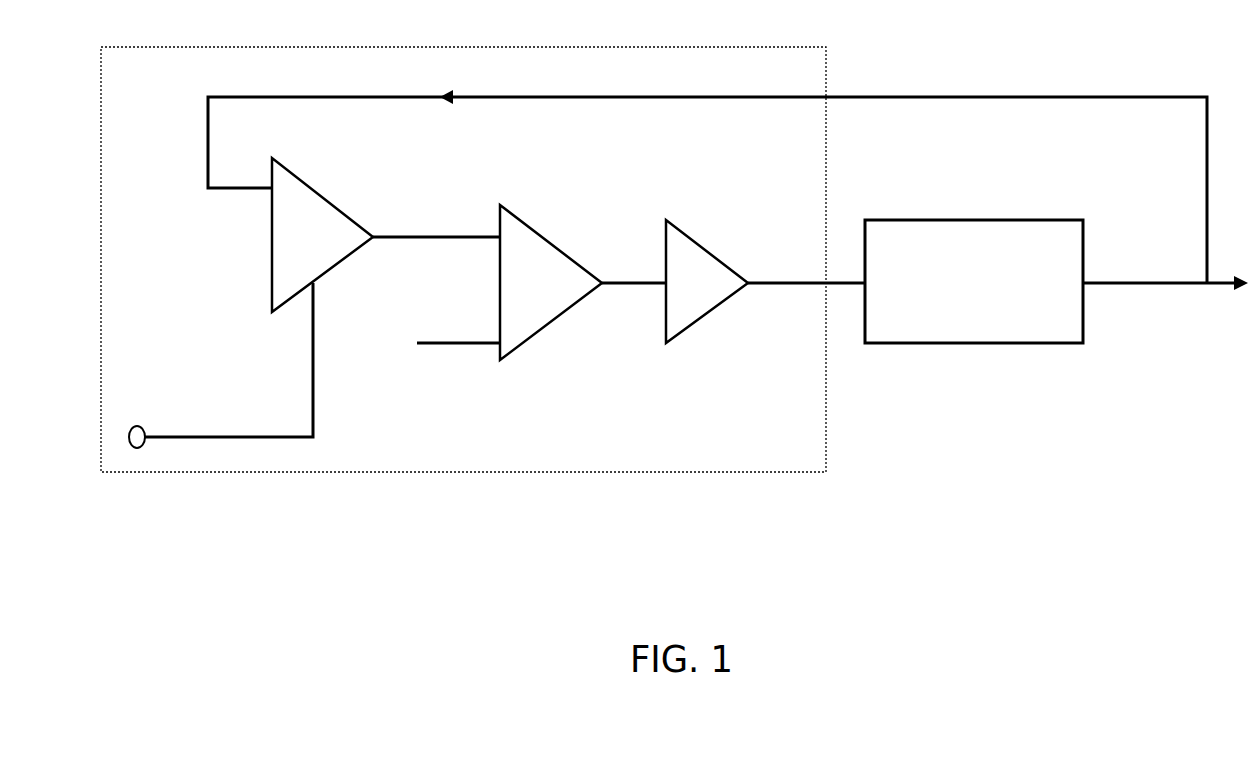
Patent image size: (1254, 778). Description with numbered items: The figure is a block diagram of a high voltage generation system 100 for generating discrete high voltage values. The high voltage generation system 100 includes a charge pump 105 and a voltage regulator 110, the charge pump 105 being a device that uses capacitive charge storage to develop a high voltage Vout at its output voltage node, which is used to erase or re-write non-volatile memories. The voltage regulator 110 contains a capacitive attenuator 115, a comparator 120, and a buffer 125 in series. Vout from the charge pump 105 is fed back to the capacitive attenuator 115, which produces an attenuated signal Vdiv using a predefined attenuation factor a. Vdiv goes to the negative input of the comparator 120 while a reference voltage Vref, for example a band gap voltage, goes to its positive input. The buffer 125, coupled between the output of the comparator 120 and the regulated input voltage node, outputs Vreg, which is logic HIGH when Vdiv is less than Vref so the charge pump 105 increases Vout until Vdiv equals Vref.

The high voltage generation system 100 is at (348, 537).
The charge pump 105 is at (975, 343).
The voltage regulator 110 is at (343, 47).
The capacitive attenuator 115 is at (318, 197).
The comparator 120 is at (552, 245).
The buffer 125 is at (708, 248).